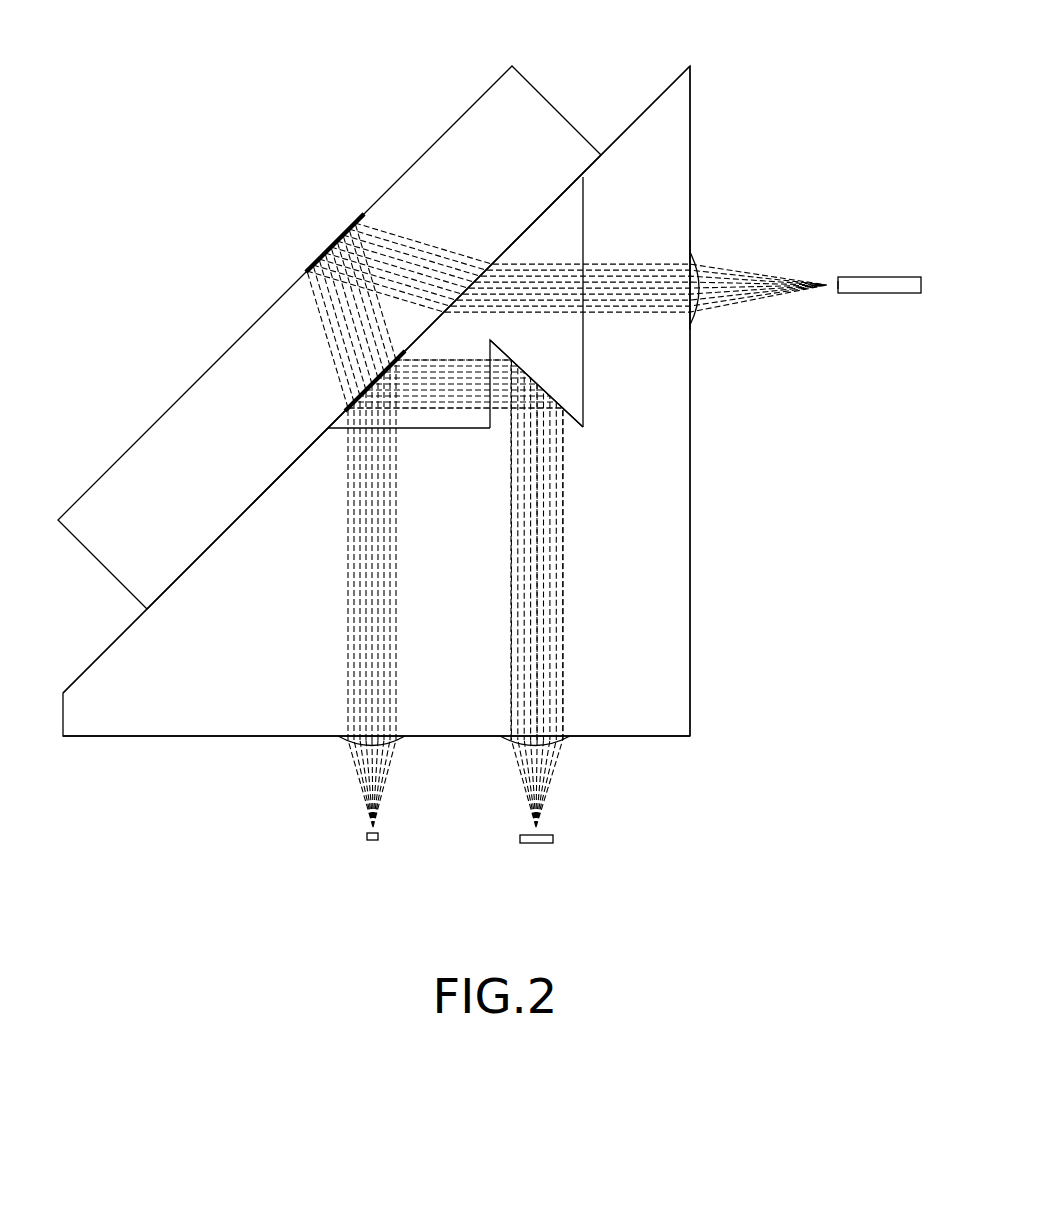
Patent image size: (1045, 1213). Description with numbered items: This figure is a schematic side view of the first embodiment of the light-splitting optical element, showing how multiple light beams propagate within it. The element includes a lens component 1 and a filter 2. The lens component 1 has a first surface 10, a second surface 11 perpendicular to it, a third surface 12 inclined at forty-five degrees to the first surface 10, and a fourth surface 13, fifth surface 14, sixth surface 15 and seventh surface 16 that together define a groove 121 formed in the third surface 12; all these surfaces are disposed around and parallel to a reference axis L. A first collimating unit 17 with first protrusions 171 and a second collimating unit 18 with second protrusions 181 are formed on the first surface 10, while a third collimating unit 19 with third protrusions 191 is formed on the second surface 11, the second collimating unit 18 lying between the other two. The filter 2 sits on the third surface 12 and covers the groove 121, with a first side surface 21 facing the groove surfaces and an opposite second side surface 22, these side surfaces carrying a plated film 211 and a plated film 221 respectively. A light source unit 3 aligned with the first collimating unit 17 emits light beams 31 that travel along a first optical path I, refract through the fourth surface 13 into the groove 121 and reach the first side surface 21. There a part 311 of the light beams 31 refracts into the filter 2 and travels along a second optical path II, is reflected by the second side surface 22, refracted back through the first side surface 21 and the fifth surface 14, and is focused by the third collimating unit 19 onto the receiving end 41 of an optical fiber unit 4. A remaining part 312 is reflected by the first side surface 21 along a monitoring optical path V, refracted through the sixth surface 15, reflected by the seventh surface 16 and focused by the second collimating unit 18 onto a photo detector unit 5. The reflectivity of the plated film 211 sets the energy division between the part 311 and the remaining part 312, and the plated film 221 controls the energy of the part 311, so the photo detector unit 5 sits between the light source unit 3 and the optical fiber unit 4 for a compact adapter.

The lens component 1 is at (106, 648).
The filter 2 is at (176, 403).
The light source unit 3 is at (372, 842).
The optical fiber unit 4 is at (878, 293).
The photo detector unit 5 is at (537, 845).
The first surface 10 is at (156, 736).
The second surface 11 is at (690, 653).
The third surface 12 is at (633, 125).
The fourth surface 13 is at (410, 427).
The fifth surface 14 is at (585, 225).
The sixth surface 15 is at (490, 420).
The seventh surface 16 is at (575, 418).
The first collimating unit 17 is at (330, 780).
The first protrusion 171 is at (340, 740).
The second collimating unit 18 is at (600, 779).
The second protrusion 181 is at (567, 741).
The third collimating unit 19 is at (746, 269).
The third protrusion 191 is at (695, 268).
The first side surface 21 is at (547, 215).
The second side surface 22 is at (375, 203).
The light beams 31 is at (386, 777).
The receiving end 41 is at (832, 282).
The groove 121 is at (560, 340).
The plated film 211 is at (345, 411).
The plated film 221 is at (337, 237).
The part of the light beams 311 is at (305, 268).
The remaining part of the light beams 312 is at (457, 403).
The first optical path I is at (350, 592).
The second optical path II is at (325, 325).
The monitoring optical path V is at (555, 633).
The reference axis L is at (533, 558).